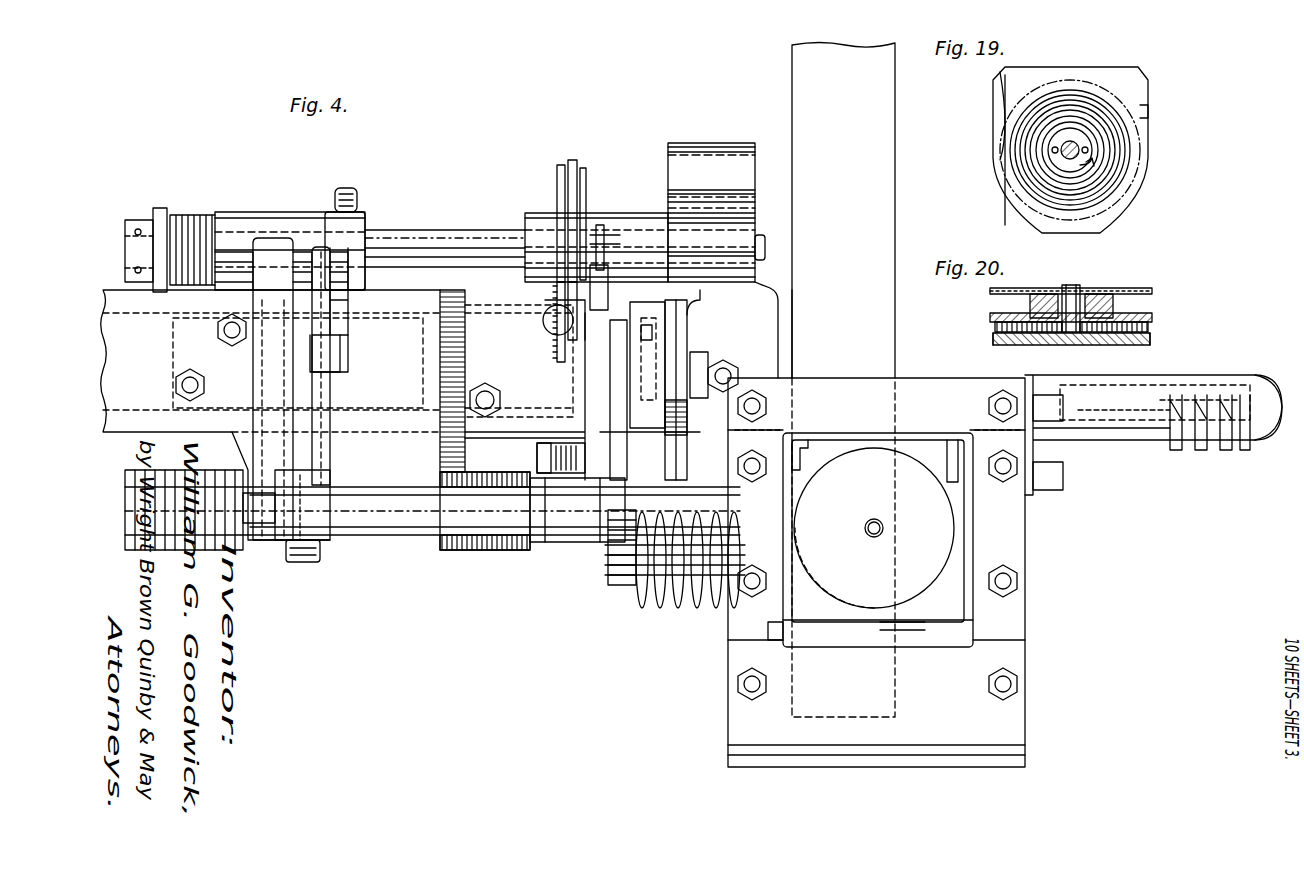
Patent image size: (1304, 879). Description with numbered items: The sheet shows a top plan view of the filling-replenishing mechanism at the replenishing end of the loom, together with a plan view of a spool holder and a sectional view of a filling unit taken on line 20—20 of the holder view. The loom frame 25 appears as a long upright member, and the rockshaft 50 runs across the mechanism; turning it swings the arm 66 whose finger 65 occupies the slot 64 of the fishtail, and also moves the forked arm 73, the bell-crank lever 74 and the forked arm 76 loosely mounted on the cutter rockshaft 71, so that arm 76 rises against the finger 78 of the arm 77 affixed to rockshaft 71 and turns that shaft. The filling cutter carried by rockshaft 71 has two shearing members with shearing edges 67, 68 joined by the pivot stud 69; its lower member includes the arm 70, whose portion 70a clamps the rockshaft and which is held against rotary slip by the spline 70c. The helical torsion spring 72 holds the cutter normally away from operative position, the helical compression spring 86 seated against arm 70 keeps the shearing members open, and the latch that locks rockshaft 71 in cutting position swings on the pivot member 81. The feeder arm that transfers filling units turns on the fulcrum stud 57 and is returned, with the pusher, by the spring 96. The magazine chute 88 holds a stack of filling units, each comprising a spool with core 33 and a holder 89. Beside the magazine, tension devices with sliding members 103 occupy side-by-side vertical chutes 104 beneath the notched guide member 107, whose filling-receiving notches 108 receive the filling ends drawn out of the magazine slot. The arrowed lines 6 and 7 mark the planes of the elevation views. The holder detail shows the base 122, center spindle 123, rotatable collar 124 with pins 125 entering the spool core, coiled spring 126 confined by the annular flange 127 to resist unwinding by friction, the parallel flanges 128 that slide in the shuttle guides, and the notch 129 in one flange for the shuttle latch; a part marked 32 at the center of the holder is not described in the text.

In FIG. 4, the section line 6- 6 is at (192, 340).
In FIG. 4, the section line 7- 7 is at (412, 170).
In FIG. 19, the section line 20— 20 is at (1170, 150).
In FIG. 4, the frame 25 is at (870, 295).
In FIG. 4, the pivot pin 32 is at (945, 590).
In FIG. 4, the core 33 is at (832, 458).
In FIG. 19, the core 33 is at (1112, 80).
In FIG. 20, the core 33 is at (1150, 295).
In FIG. 4, the rockshaft 50 is at (350, 538).
In FIG. 4, the fulcrum stud 57 is at (608, 570).
In FIG. 4, the slot 64 is at (650, 408).
In FIG. 4, the finger 65 is at (650, 328).
In FIG. 4, the arm 66 is at (630, 385).
In FIG. 4, the shearing edge 67 is at (557, 192).
In FIG. 4, the shearing edge 68 is at (586, 185).
In FIG. 4, the pivot stud 69 is at (595, 265).
In FIG. 4, the arm 70 is at (553, 348).
In FIG. 4, the clamping portion 70a is at (520, 218).
In FIG. 4, the spline 70c is at (415, 232).
In FIG. 4, the rockshaft 71 is at (455, 232).
In FIG. 4, the helical torsion spring 72 is at (207, 225).
In FIG. 4, the forked arm 73 is at (282, 545).
In FIG. 4, the bell-crank lever 74 is at (330, 455).
In FIG. 4, the forked arm 76 is at (250, 345).
In FIG. 4, the arm 77 is at (348, 302).
In FIG. 4, the finger 78 is at (328, 325).
In FIG. 4, the pivot member 81 is at (515, 482).
In FIG. 4, the helical compression spring 86 is at (540, 312).
In FIG. 4, the chute 88 is at (973, 545).
In FIG. 4, the holder 89 is at (858, 608).
In FIG. 19, the holder 89 is at (1118, 205).
In FIG. 20, the holder 89 is at (990, 342).
In FIG. 4, the spring 96 is at (675, 605).
In FIG. 4, the sliding member 103 is at (1212, 445).
In FIG. 4, the vertical chute 104 is at (1159, 407).
In FIG. 4, the notched guide member 107 is at (1108, 440).
In FIG. 4, the filling-receiving notch 108 is at (1252, 400).
In FIG. 20, the base 122 is at (1130, 335).
In FIG. 20, the center spindle 123 is at (1073, 292).
In FIG. 20, the rotatable collar 124 is at (1020, 346).
In FIG. 20, the pin 125 is at (1170, 302).
In FIG. 19, the coiled spring 126 is at (1022, 182).
In FIG. 20, the coiled spring 126 is at (1090, 332).
In FIG. 20, the annular flange 127 is at (1152, 318).
In FIG. 4, the flange 128 is at (800, 462).
In FIG. 19, the flange 128 is at (1000, 95).
In FIG. 20, the flange 128 is at (1185, 340).
In FIG. 4, the notch 129 is at (955, 490).
In FIG. 19, the notch 129 is at (1150, 112).